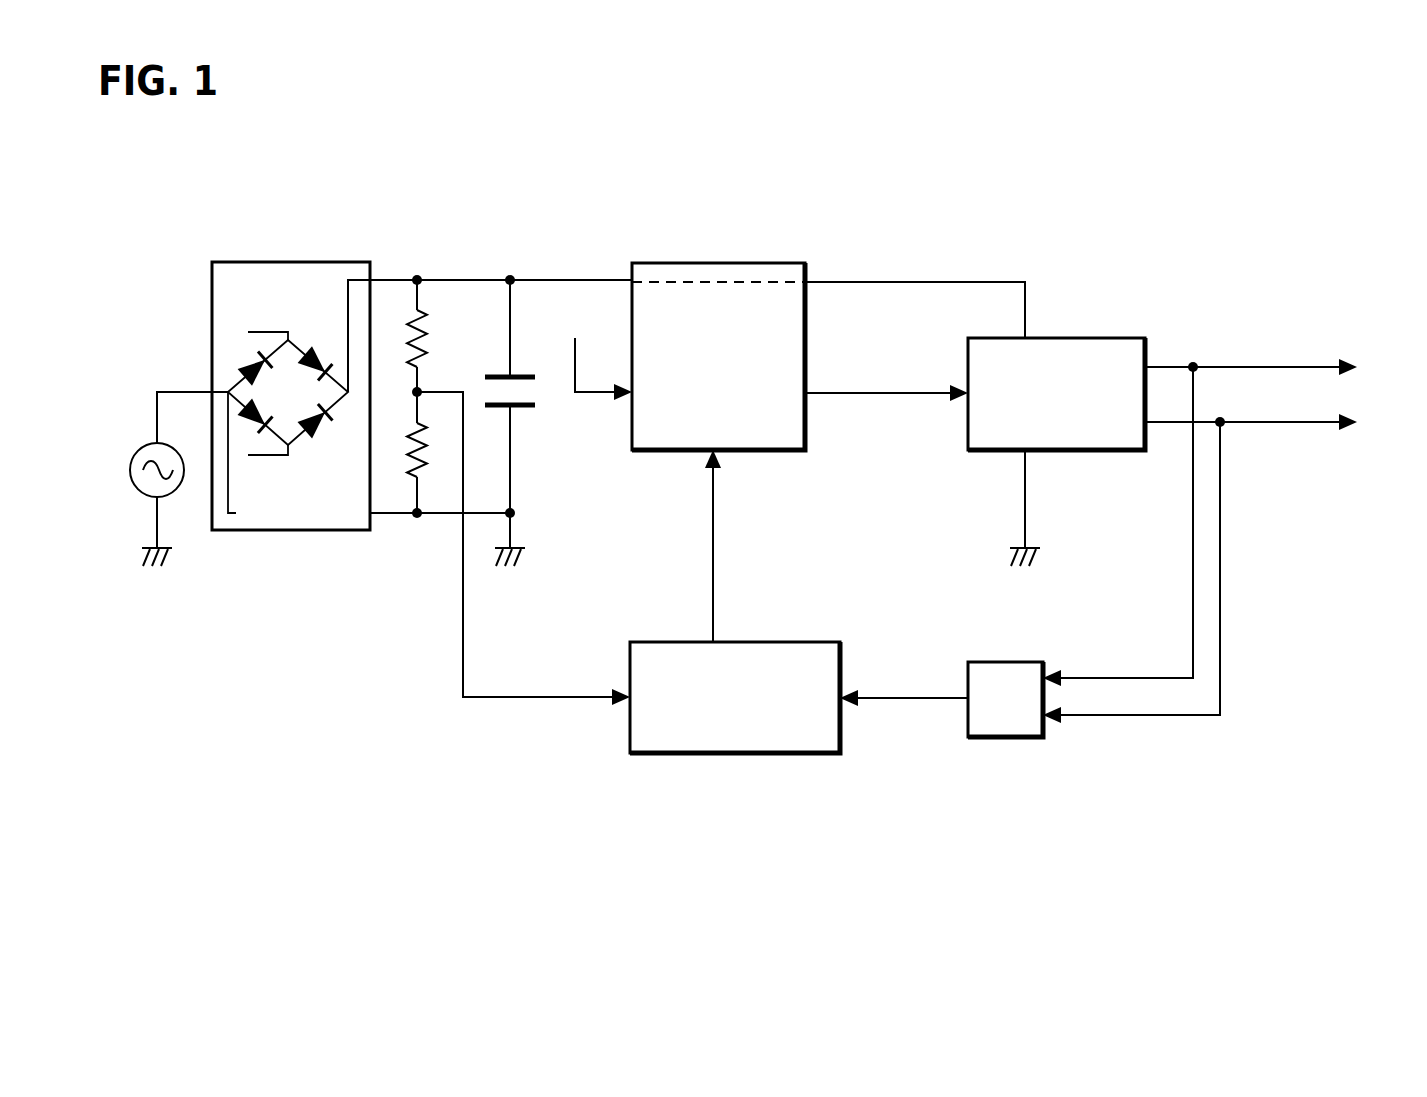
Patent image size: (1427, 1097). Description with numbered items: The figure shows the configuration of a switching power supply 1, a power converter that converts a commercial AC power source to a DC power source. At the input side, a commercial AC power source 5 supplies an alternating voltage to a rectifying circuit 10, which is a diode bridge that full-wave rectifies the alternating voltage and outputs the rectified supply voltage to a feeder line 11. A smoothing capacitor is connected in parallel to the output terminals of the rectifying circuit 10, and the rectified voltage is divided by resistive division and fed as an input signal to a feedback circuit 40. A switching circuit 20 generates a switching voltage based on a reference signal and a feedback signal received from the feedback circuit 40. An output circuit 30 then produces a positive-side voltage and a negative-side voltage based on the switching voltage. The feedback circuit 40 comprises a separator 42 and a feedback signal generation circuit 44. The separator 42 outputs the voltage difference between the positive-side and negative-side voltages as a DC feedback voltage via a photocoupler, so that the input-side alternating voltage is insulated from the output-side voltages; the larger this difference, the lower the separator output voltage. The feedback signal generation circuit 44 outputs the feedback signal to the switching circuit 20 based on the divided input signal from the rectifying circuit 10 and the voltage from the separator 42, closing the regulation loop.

The switching power supply 1 is at (218, 178).
The commercial AC power source 5 is at (150, 445).
The rectifying circuit 10 is at (300, 262).
The feeder line 11 is at (588, 279).
The switching (SW) circuit 20 is at (740, 455).
The output circuit 30 is at (1095, 338).
The feedback circuit 40 is at (631, 773).
The separator 42 is at (1010, 662).
The feedback signal generation circuit 44 is at (735, 650).